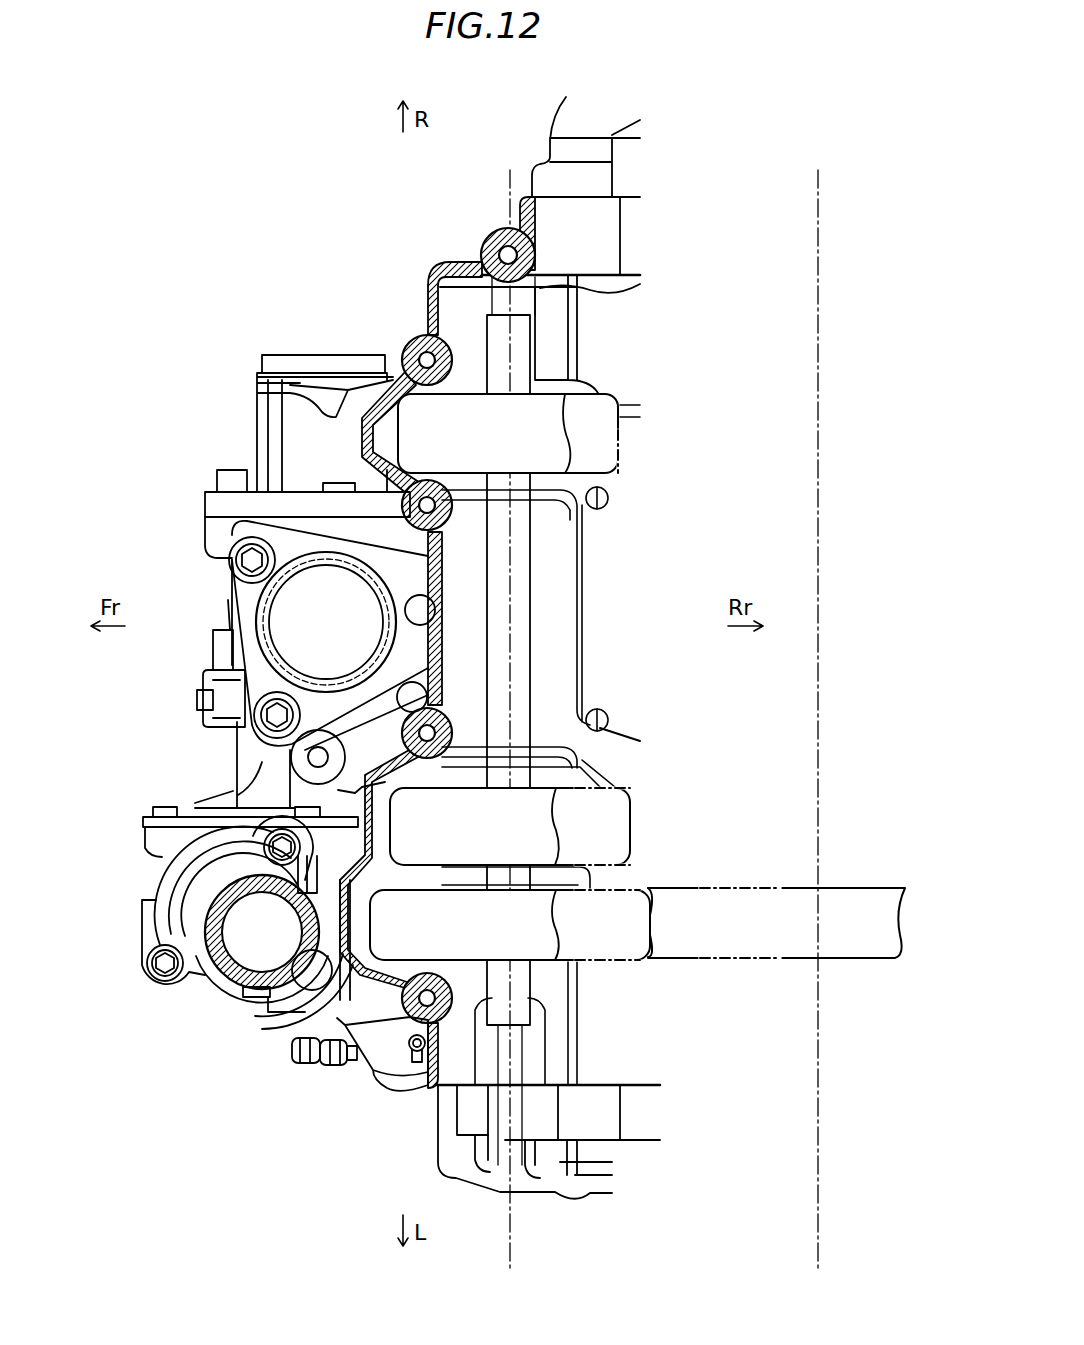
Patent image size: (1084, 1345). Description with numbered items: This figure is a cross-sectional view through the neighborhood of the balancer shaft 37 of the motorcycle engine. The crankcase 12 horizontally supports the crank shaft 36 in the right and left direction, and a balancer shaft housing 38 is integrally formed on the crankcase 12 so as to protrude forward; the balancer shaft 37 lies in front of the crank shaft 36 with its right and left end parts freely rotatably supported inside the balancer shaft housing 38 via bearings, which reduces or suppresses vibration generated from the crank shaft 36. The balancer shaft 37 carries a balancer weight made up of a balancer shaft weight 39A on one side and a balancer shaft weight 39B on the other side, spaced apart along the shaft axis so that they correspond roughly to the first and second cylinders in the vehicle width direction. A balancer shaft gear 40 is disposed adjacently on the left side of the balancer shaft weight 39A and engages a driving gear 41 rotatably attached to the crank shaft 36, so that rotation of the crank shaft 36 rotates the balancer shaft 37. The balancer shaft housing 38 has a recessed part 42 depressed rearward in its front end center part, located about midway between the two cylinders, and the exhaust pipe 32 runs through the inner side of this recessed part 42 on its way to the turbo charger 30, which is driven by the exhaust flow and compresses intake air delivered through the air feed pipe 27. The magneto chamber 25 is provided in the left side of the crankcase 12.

The crankcase 12 is at (608, 321).
The magneto chamber 25 is at (604, 1170).
The air feed pipe 27 is at (227, 980).
The turbo charger 30 is at (230, 700).
The exhaust pipe 32 is at (312, 552).
The crank shaft 36 is at (818, 242).
The balancer shaft 37 is at (510, 620).
The balancer shaft housing 38 is at (372, 393).
The balancer shaft weight 39A is at (527, 815).
The balancer shaft weight 39B is at (535, 455).
The balancer shaft gear 40 is at (535, 921).
The driving gear 41 is at (770, 960).
The recessed part 42 is at (410, 572).